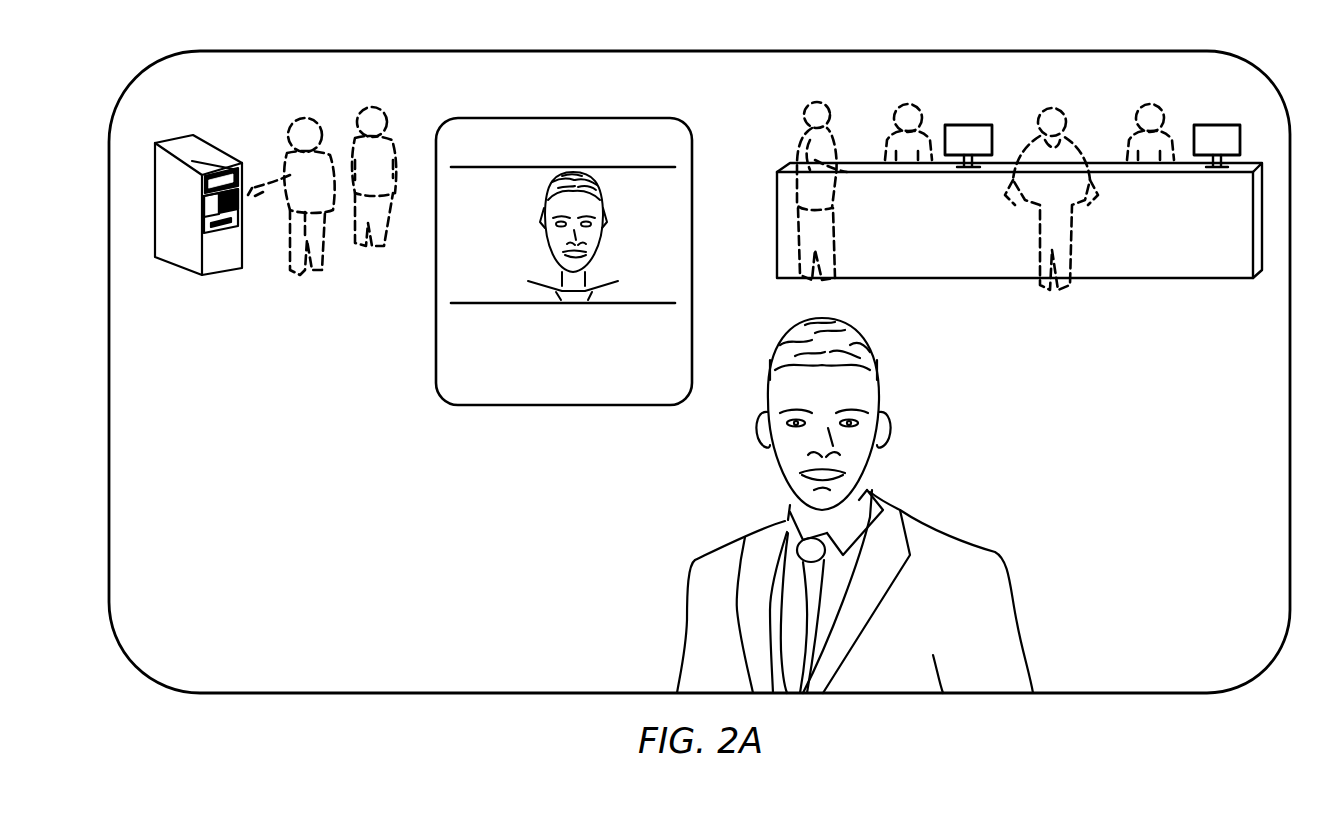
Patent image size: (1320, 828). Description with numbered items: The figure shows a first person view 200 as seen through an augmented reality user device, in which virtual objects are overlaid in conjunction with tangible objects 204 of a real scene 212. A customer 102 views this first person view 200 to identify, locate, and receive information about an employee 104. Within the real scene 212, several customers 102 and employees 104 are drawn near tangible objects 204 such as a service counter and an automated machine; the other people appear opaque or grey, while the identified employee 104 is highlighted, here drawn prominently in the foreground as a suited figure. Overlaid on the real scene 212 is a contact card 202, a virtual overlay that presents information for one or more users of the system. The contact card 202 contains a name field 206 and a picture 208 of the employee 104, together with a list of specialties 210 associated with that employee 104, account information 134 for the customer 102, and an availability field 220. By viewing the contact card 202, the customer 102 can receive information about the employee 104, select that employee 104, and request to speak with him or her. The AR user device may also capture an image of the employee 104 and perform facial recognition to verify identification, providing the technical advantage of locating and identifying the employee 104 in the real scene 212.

The first person view 200 is at (1095, 22).
The real scene 212 is at (699, 372).
The customer 102 is at (298, 280).
The employee 104 is at (900, 105).
The contact card 202 is at (620, 118).
The name field 206 is at (676, 140).
The photo 208 is at (674, 240).
The specialties 210 is at (558, 326).
The account information 134 is at (668, 357).
The availability field 220 is at (572, 390).
The tangible objects 204 is at (1155, 280).